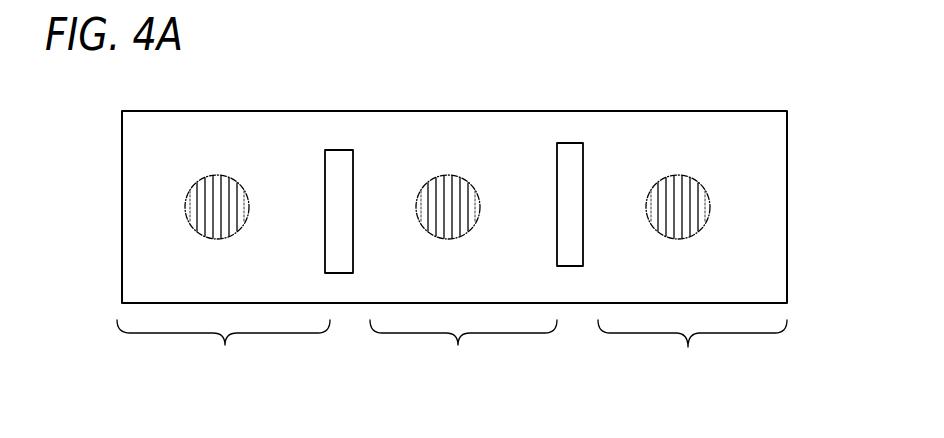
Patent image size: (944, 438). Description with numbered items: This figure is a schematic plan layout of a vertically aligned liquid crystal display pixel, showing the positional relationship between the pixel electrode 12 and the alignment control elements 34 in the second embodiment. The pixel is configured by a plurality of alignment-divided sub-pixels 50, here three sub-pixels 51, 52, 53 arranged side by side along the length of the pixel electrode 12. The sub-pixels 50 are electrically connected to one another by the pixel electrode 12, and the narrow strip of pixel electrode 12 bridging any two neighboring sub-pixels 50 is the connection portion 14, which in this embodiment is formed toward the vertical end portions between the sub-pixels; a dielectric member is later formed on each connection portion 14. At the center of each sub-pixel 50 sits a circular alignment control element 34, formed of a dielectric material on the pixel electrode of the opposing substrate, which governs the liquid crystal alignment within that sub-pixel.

The pixel electrode 12 is at (765, 132).
The connection portion 14 is at (568, 283).
The alignment control element 34 is at (693, 208).
The sub-pixel 50 is at (452, 350).
The sub-pixel 51 is at (223, 350).
The sub-pixel 52 is at (463, 348).
The sub-pixel 53 is at (692, 348).